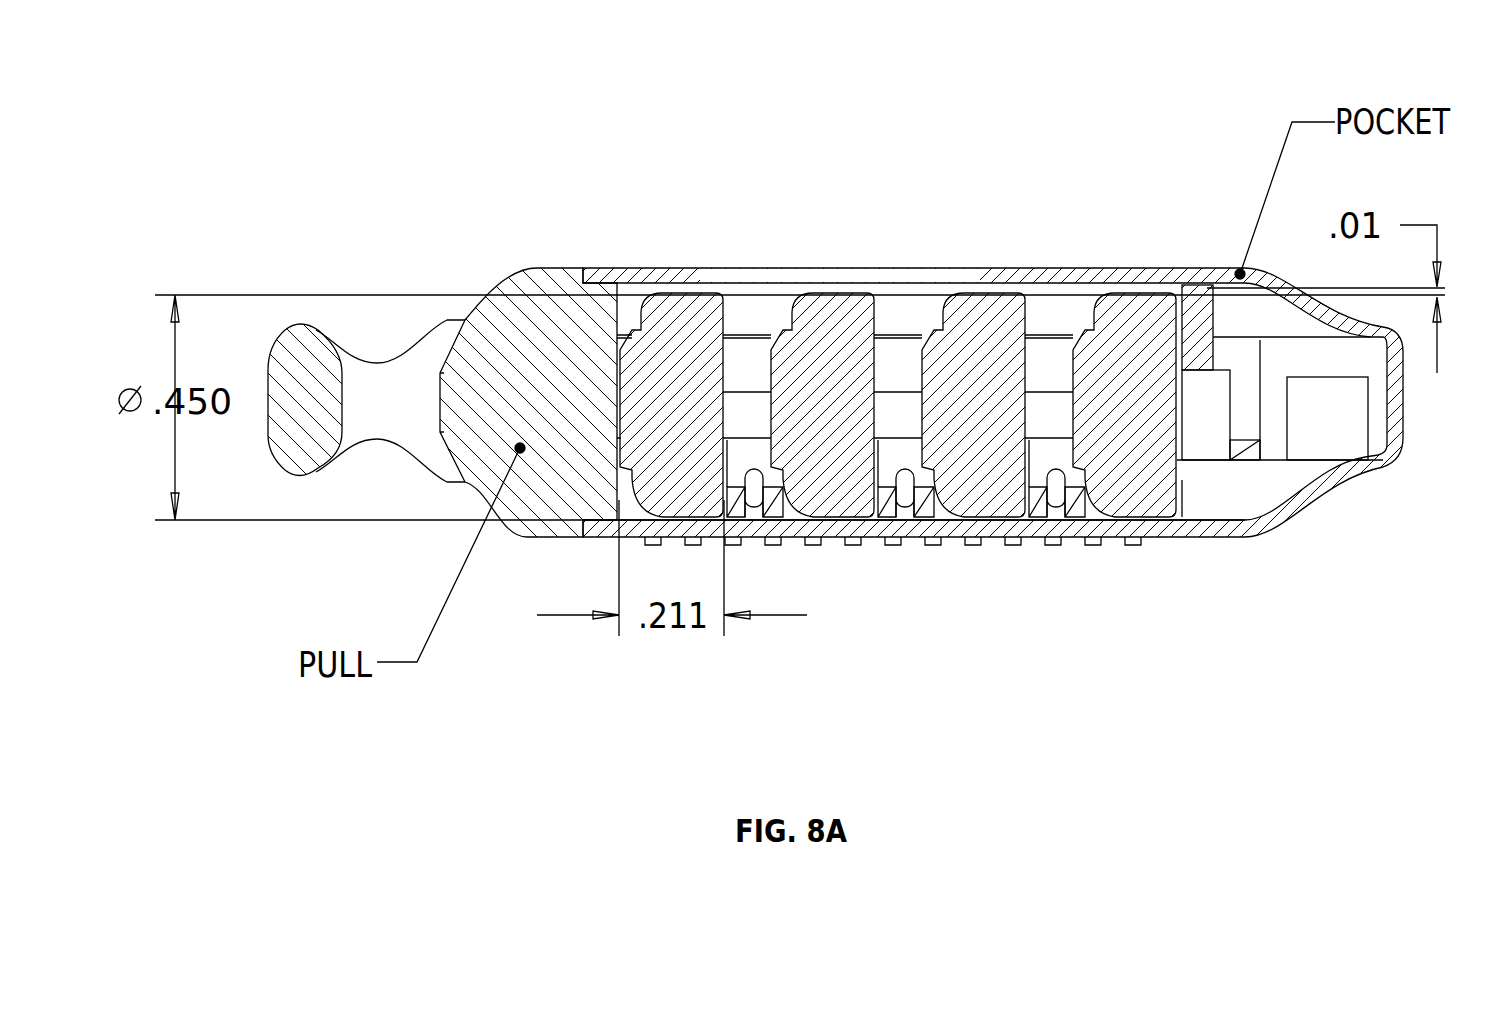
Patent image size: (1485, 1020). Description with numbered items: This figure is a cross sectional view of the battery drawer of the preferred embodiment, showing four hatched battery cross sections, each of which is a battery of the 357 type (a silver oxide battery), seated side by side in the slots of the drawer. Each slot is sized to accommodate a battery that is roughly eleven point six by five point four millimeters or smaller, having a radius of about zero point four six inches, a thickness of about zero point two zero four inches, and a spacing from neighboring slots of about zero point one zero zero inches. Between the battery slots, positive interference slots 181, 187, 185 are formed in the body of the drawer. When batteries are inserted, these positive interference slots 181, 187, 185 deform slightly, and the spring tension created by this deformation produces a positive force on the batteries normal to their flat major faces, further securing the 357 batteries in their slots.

The 357 type silver oxide battery 357 is at (668, 400).
The positive interference slot 181 is at (752, 510).
The contact pin 187 is at (905, 510).
The positive interference slot 185 is at (1058, 510).